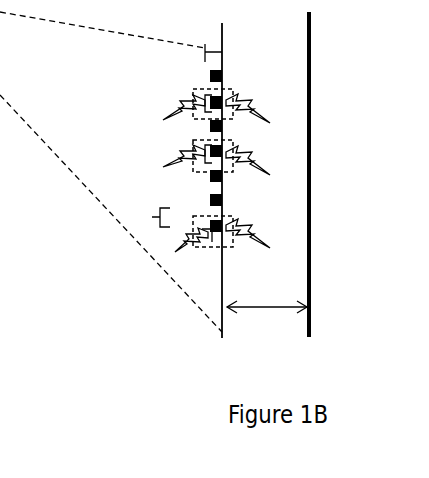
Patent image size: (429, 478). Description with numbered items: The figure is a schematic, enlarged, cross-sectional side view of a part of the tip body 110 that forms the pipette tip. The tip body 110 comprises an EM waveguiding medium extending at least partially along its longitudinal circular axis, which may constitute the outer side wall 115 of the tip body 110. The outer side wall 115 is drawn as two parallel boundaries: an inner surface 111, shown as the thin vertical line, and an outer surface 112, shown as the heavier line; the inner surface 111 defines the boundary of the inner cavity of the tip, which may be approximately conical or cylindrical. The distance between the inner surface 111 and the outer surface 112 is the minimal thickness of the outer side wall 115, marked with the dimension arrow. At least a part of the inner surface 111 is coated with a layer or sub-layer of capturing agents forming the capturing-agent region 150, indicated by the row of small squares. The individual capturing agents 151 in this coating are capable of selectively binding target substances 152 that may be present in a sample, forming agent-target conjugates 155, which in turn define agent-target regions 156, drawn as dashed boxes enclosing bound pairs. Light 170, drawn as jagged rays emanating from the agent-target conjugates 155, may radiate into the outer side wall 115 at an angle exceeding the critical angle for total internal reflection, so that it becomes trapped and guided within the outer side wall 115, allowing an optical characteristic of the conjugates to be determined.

The tip body 110 is at (334, 112).
The inner surface 111 is at (222, 260).
The outer surface 112 is at (310, 248).
The outer side wall 115 is at (275, 195).
The capturing-agent region 150 is at (204, 41).
The pixel element 151 is at (210, 72).
The target substances 152 is at (160, 208).
The agent-target conjugates 155 is at (193, 88).
The agent-target regions 156 is at (200, 247).
The light 170 is at (163, 121).